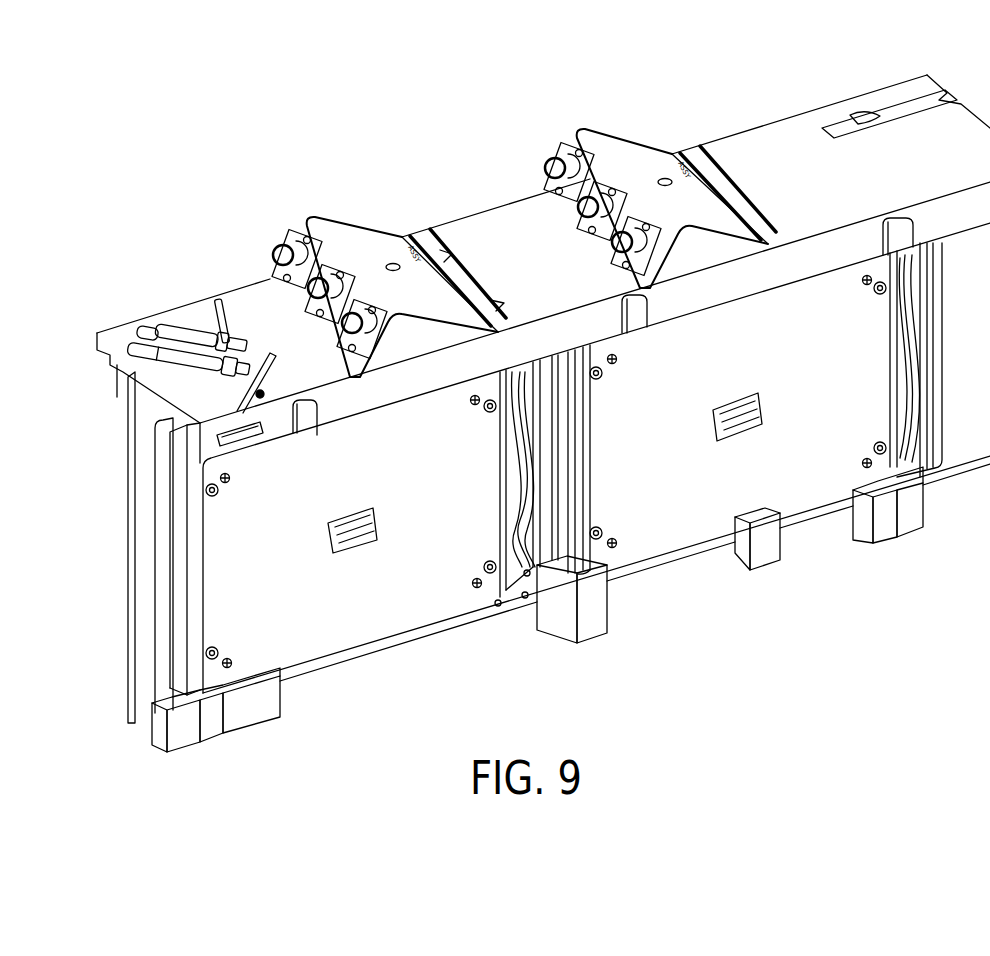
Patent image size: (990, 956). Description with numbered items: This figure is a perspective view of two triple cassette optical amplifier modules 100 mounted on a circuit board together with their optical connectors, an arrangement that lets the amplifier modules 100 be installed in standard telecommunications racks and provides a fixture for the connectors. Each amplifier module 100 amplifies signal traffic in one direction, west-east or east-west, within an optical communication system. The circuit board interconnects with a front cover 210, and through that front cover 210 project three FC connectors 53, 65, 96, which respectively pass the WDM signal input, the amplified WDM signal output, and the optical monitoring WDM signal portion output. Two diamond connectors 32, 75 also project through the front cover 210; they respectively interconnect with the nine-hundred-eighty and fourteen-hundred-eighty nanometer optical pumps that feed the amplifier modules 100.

The front cover 210 is at (757, 138).
The optical amplifier module 100 is at (394, 594).
The FC connector 53 is at (282, 252).
The FC connector 65 is at (320, 280).
The FC connector 96 is at (363, 337).
The diamond connector 32 is at (144, 324).
The diamond connector 75 is at (177, 328).